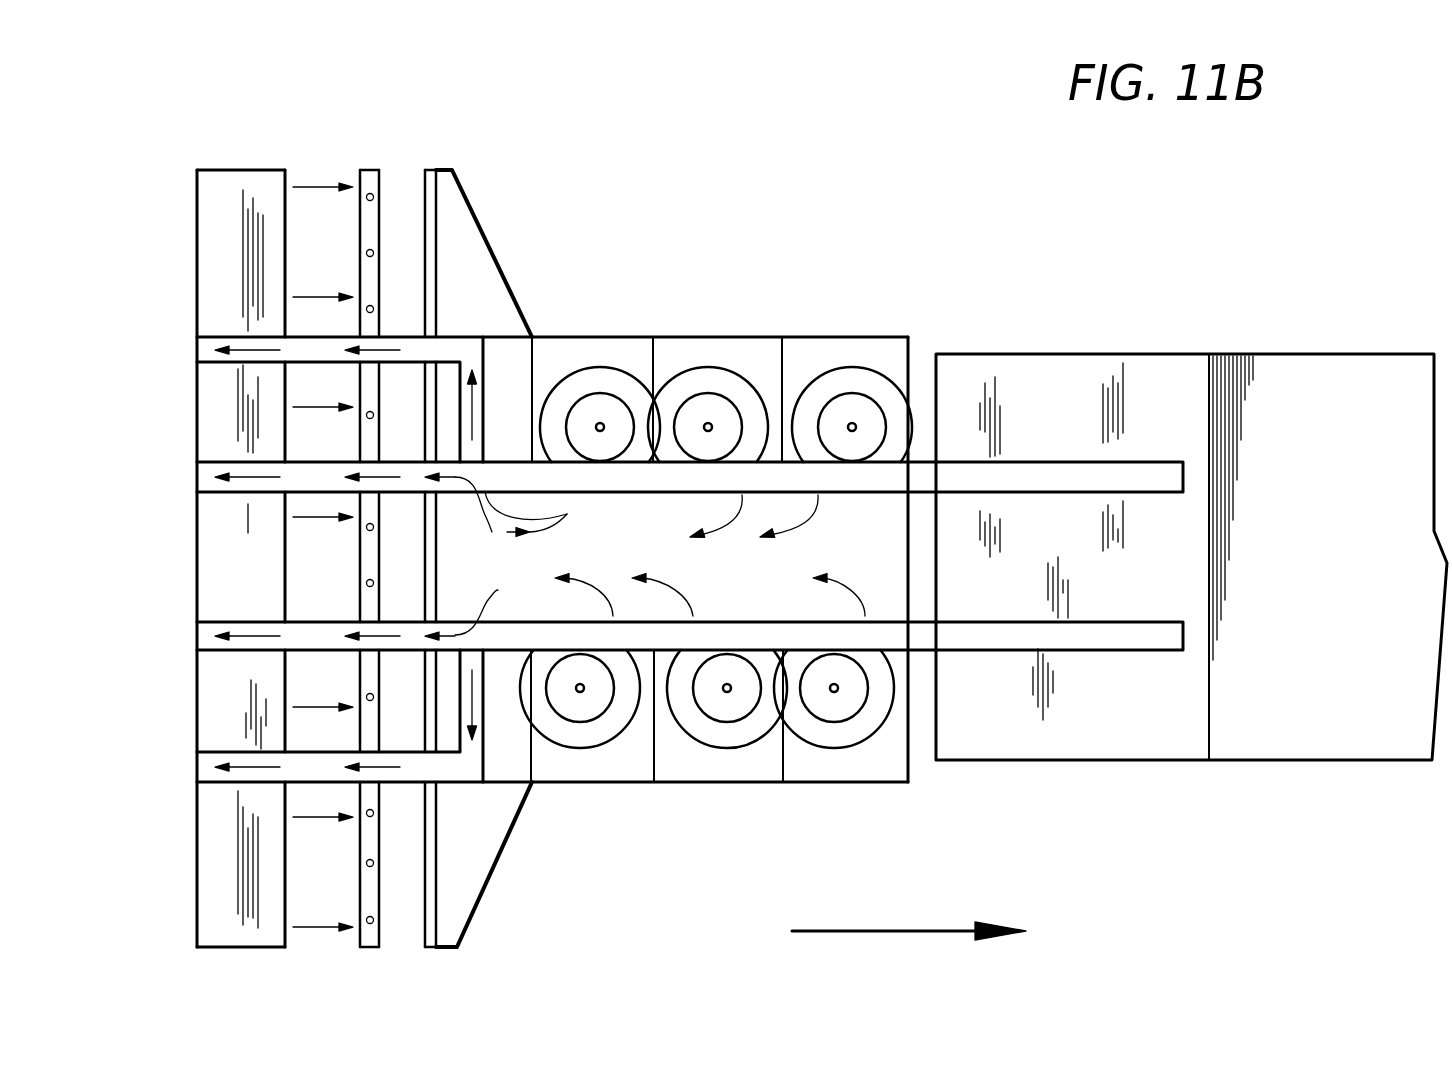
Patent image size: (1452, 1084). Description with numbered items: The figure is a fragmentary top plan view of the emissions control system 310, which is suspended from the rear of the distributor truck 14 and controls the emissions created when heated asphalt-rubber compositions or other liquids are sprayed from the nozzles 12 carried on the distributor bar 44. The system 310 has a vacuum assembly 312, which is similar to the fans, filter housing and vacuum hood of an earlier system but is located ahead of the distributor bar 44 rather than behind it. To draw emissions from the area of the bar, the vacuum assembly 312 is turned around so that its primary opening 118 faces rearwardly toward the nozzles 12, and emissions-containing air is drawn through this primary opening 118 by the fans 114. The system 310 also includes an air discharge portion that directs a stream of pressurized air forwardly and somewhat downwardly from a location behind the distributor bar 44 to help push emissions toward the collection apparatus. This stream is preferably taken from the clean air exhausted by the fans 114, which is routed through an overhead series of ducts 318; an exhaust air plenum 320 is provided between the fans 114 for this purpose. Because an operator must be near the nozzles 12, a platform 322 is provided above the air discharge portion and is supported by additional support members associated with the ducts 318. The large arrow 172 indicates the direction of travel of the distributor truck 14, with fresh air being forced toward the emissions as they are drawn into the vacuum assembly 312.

The system 310 is at (810, 208).
The vacuum assembly 312 is at (890, 325).
The ducts 318 is at (200, 352).
The exhaust air plenum 320 is at (572, 498).
The platform 322 is at (215, 858).
The fans 114 is at (600, 367).
The primary opening 118 is at (425, 175).
The nozzles 12 is at (364, 252).
The distributor bar 44 is at (342, 510).
The distributor truck 14 is at (1142, 345).
The direction of travel 172 is at (888, 928).